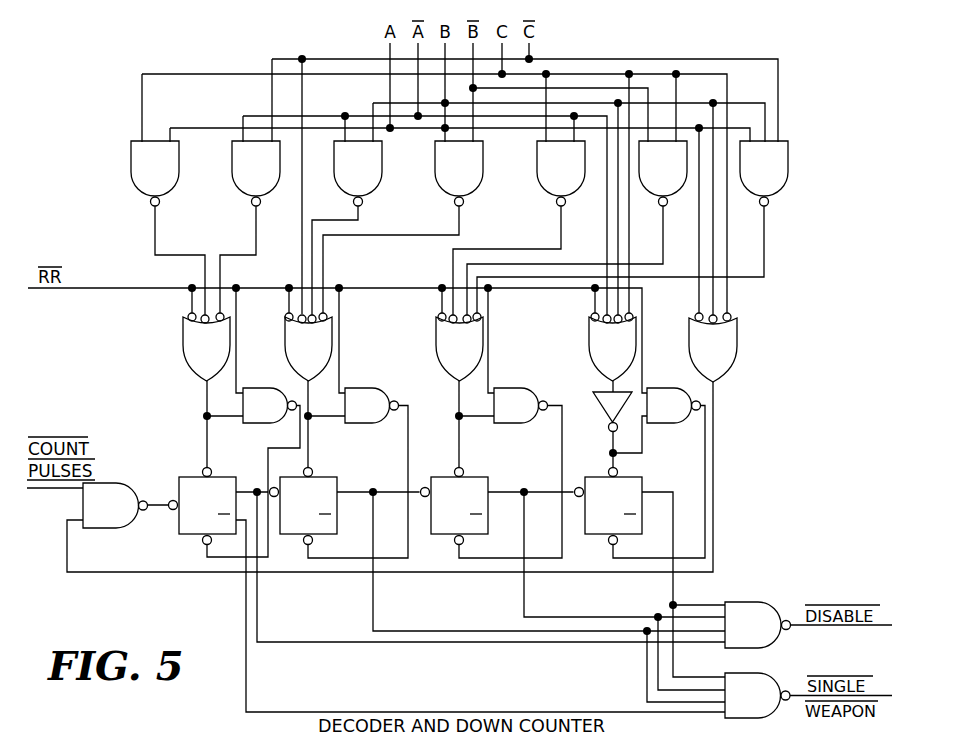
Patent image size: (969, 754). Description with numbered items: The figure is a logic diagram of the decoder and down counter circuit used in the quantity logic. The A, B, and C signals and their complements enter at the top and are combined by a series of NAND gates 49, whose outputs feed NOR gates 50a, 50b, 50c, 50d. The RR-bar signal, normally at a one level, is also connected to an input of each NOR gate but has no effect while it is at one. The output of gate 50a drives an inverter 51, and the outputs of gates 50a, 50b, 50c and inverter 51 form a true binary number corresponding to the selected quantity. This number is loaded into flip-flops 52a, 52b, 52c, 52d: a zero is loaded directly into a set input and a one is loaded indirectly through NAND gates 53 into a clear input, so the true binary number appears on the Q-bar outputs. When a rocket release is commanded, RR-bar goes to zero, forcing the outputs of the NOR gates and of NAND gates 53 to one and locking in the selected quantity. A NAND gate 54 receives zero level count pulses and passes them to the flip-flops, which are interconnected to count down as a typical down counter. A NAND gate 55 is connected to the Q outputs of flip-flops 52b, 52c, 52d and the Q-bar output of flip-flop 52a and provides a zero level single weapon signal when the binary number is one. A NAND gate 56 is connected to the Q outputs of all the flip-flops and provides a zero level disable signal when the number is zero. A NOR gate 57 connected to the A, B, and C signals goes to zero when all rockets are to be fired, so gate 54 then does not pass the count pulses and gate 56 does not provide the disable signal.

The NAND gates 49 is at (232, 172).
The NOR gate 50a is at (190, 368).
The NOR gate 50b is at (287, 360).
The NOR gate 50c is at (436, 340).
The NOR gate 50d is at (589, 360).
The inverter 51 is at (604, 409).
The flip-flop 52a is at (188, 538).
The flip-flop 52b is at (338, 525).
The flip-flop 52c is at (489, 525).
The flip-flop 52d is at (643, 525).
The NAND gates 53 is at (258, 425).
The NAND gate 54 is at (112, 530).
The NAND gate 55 is at (765, 719).
The NAND gate 56 is at (753, 602).
The NOR gate 57 is at (738, 343).